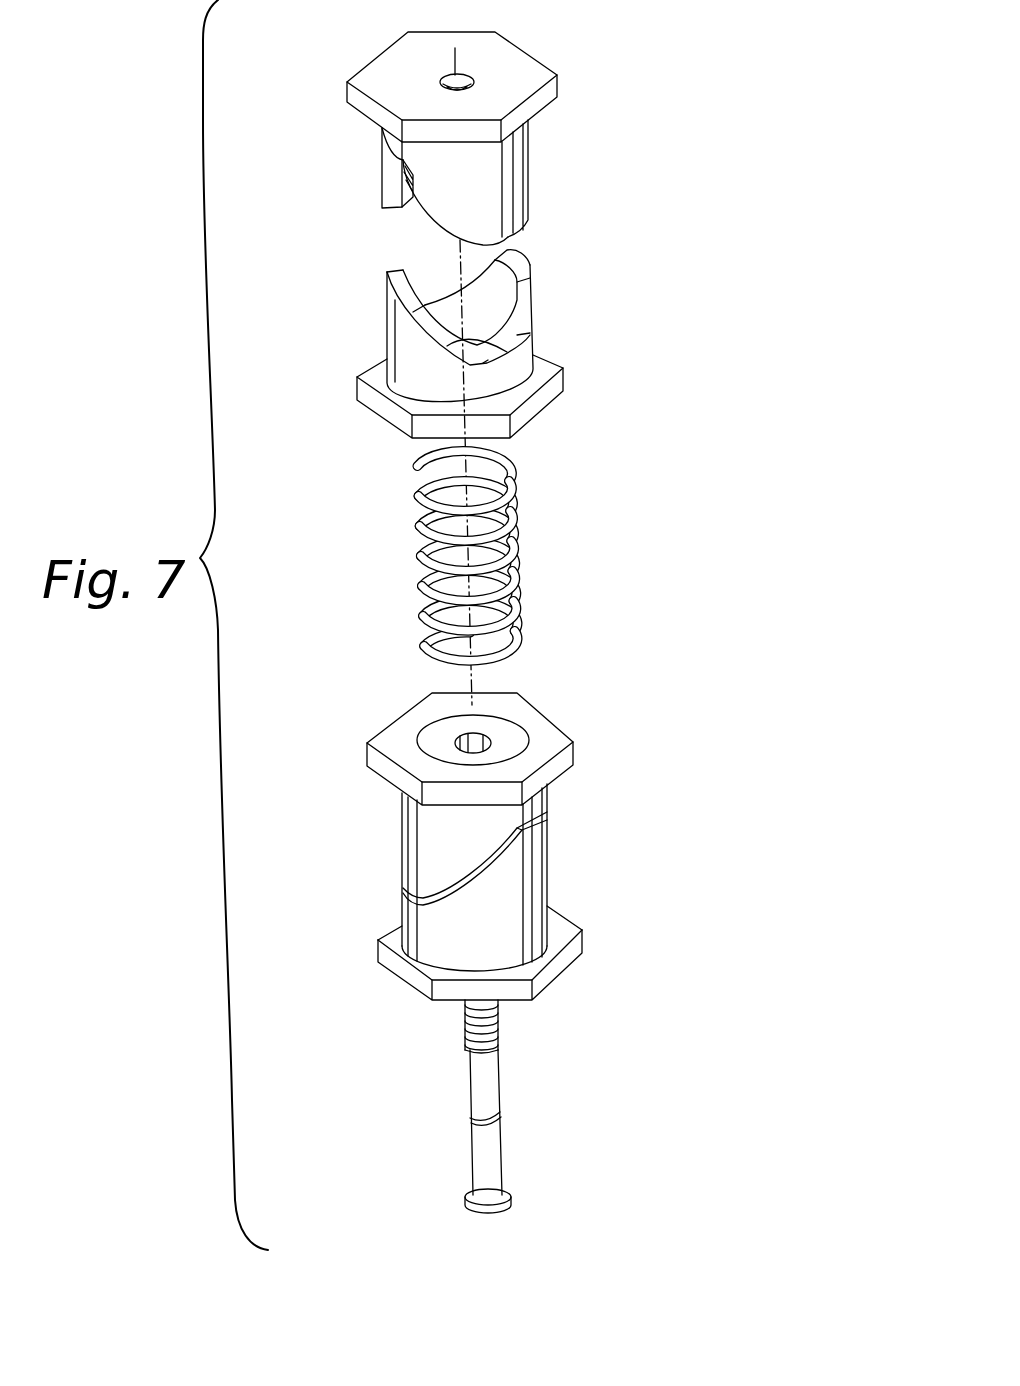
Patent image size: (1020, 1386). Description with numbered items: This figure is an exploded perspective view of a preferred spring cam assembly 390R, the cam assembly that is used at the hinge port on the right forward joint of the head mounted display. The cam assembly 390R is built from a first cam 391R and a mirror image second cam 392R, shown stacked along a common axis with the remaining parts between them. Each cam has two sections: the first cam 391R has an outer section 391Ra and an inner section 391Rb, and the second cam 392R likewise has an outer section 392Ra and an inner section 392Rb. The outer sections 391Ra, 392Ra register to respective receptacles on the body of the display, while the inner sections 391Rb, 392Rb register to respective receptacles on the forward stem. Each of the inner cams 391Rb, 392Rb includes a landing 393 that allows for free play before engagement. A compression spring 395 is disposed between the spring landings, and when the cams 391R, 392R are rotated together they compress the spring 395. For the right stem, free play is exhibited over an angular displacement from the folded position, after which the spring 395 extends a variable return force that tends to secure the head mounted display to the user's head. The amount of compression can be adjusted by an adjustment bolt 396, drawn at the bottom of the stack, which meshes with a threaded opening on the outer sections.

The spring cam assembly 390R is at (745, 287).
The first cam 391R is at (603, 208).
The outer section of first cam 391Ra is at (532, 157).
The inner section of first cam 391Rb is at (387, 327).
The second cam 392R is at (597, 818).
The outer section of second cam 392Ra is at (548, 877).
The inner section of second cam 392Rb is at (400, 830).
The landing 393 is at (520, 727).
The compression spring 395 is at (517, 540).
The adjustment bolt 396 is at (470, 1143).